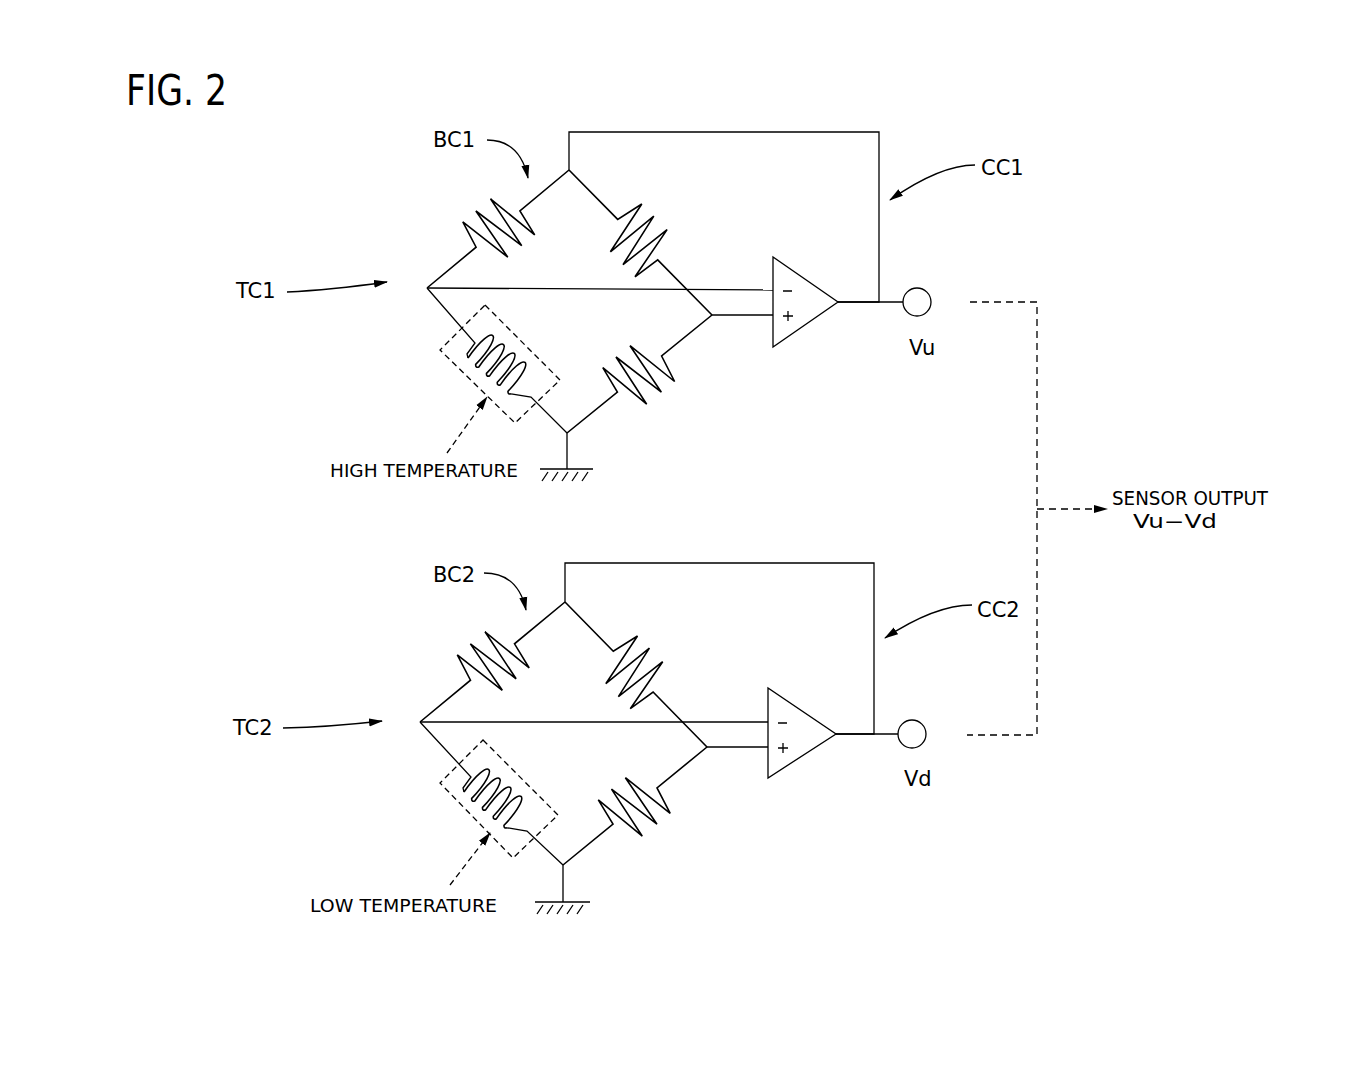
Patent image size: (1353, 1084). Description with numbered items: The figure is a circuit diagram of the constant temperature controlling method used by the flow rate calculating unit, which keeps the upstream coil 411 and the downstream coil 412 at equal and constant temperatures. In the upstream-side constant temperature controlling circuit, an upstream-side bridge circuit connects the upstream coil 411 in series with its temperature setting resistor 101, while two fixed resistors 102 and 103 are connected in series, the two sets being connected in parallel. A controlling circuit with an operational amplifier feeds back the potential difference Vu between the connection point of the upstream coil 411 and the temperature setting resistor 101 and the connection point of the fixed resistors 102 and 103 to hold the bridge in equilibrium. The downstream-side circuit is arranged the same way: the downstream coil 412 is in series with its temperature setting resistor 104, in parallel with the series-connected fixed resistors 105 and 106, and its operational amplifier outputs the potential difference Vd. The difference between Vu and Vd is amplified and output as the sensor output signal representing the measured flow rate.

The temperature setting resistor 101 is at (480, 208).
The fixed resistor 102 is at (656, 228).
The fixed resistor 103 is at (660, 389).
The temperature setting resistor 104 is at (478, 641).
The fixed resistor 105 is at (650, 660).
The fixed resistor 106 is at (658, 821).
The upstream coil 411 is at (473, 377).
The downstream coil 412 is at (475, 817).